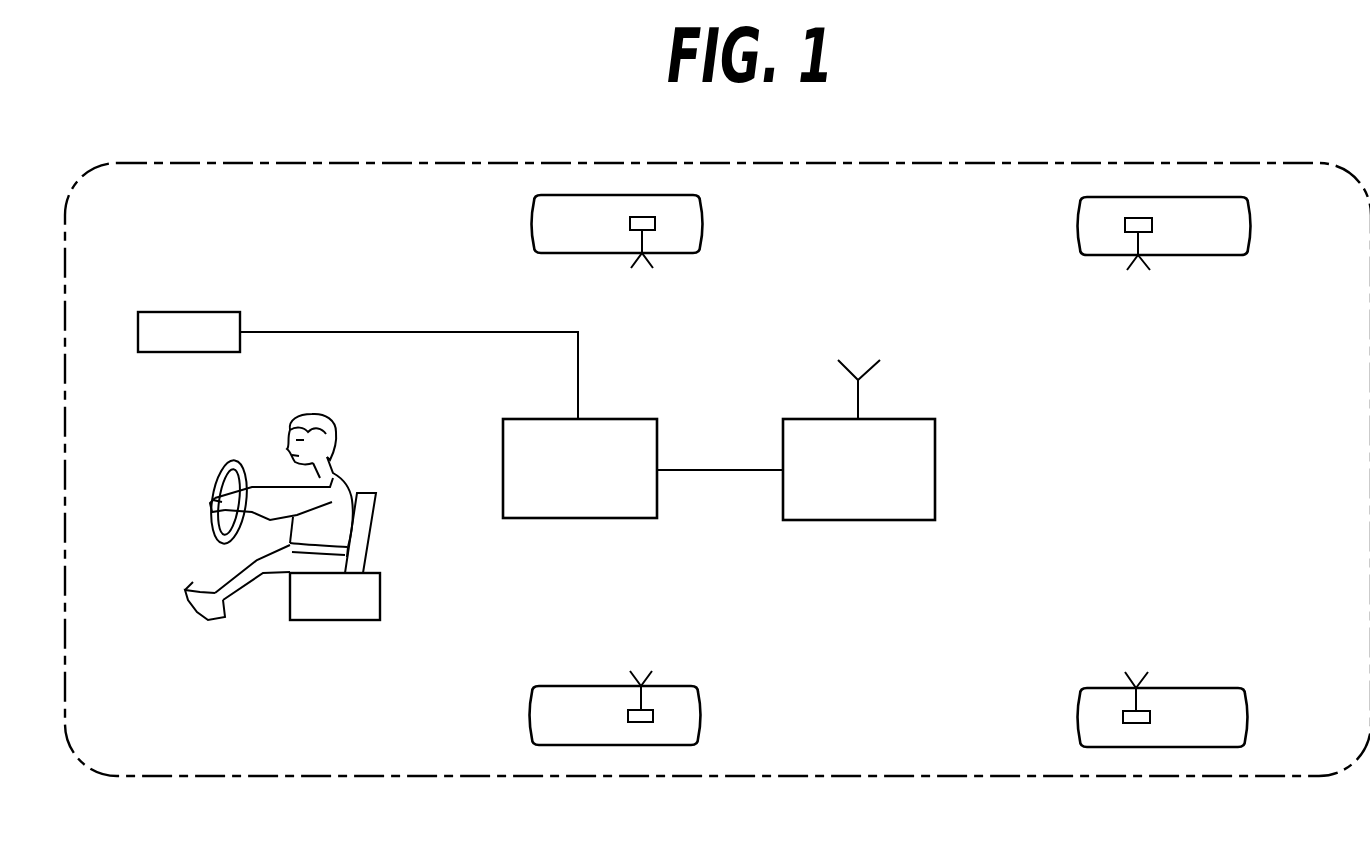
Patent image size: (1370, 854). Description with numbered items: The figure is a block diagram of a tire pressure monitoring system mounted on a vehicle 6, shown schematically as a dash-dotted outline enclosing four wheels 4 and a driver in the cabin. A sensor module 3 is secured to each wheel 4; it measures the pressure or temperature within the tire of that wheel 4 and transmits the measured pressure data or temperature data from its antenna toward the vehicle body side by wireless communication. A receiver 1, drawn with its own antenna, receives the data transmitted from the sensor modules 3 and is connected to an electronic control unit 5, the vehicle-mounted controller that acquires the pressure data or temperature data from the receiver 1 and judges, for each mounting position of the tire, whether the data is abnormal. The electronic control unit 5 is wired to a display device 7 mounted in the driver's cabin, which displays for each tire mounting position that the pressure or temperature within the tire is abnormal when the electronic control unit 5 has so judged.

The receiver 1 is at (858, 520).
The sensor module 3 is at (655, 223).
The wheel 4 is at (532, 222).
The electronic control unit 5 is at (578, 518).
The vehicle 6 is at (260, 163).
The display device 7 is at (186, 312).